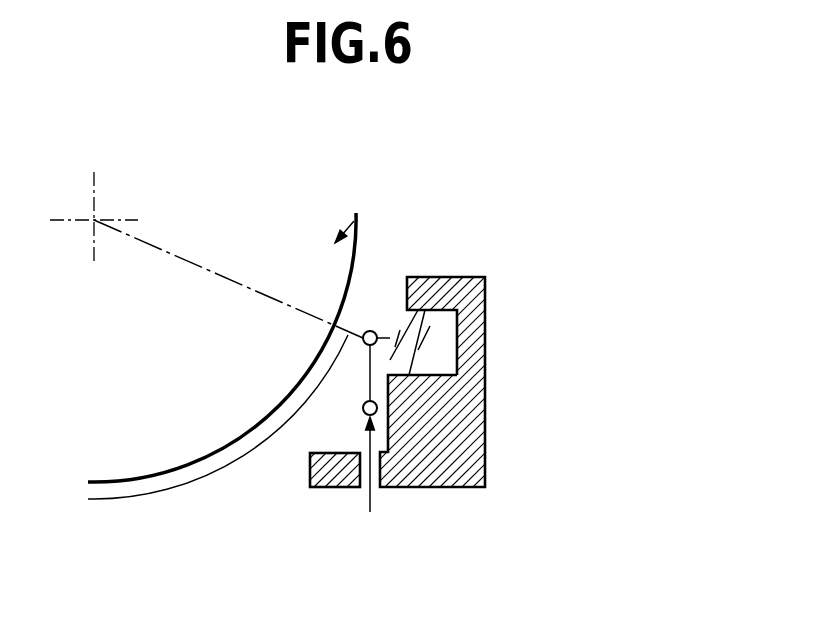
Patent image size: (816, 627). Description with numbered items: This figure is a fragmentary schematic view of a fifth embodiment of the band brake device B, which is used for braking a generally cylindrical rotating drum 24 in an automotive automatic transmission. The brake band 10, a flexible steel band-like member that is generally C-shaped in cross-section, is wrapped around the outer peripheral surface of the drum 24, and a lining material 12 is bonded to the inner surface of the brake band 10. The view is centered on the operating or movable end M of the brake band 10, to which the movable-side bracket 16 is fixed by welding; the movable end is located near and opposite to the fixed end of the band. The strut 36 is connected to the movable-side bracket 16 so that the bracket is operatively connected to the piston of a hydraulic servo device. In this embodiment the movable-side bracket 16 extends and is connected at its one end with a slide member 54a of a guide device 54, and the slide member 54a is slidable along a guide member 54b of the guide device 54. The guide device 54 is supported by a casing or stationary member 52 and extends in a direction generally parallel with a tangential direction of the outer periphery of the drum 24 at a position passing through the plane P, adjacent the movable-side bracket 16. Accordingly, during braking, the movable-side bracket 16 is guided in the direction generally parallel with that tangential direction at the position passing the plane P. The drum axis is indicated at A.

The brake band 10 is at (188, 488).
The lining material 12 is at (140, 483).
The movable-side bracket 16 is at (353, 336).
The rotating drum 24 is at (354, 221).
The strut 36 is at (363, 404).
The casing or stationary member 52 is at (486, 415).
The guide device 54 is at (486, 300).
The slide member 54a is at (437, 326).
The guide member 54b is at (413, 322).
The drum axis A is at (94, 220).
The plane P is at (196, 262).
The movable end M is at (362, 338).
The band brake device B is at (448, 188).